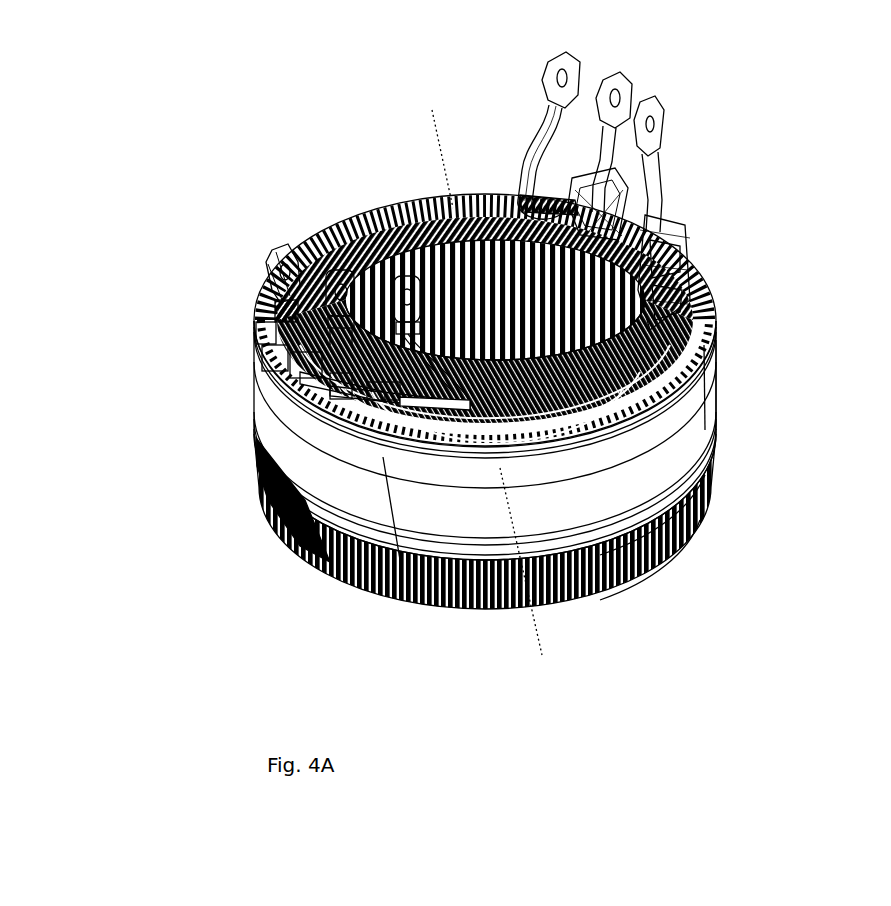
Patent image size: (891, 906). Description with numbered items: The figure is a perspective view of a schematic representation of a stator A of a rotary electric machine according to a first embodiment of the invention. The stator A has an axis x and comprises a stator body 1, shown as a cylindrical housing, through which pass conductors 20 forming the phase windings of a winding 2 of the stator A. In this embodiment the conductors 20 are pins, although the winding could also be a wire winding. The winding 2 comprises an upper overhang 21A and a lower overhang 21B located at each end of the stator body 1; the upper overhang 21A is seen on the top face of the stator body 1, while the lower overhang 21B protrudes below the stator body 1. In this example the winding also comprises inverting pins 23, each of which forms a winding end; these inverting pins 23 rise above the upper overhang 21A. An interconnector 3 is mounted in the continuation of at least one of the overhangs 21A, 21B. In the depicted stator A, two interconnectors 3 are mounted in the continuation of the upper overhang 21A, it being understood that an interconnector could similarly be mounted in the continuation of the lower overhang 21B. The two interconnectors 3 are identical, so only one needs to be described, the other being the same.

The stator body 1 is at (333, 529).
The winding 2 is at (332, 585).
The interconnector 3 is at (670, 240).
The conductors 20 is at (633, 563).
The upper overhang 21A is at (346, 223).
The lower overhang 21B is at (727, 470).
The inverting pins 23 is at (556, 192).
The stator A is at (183, 331).
The axis x is at (440, 151).